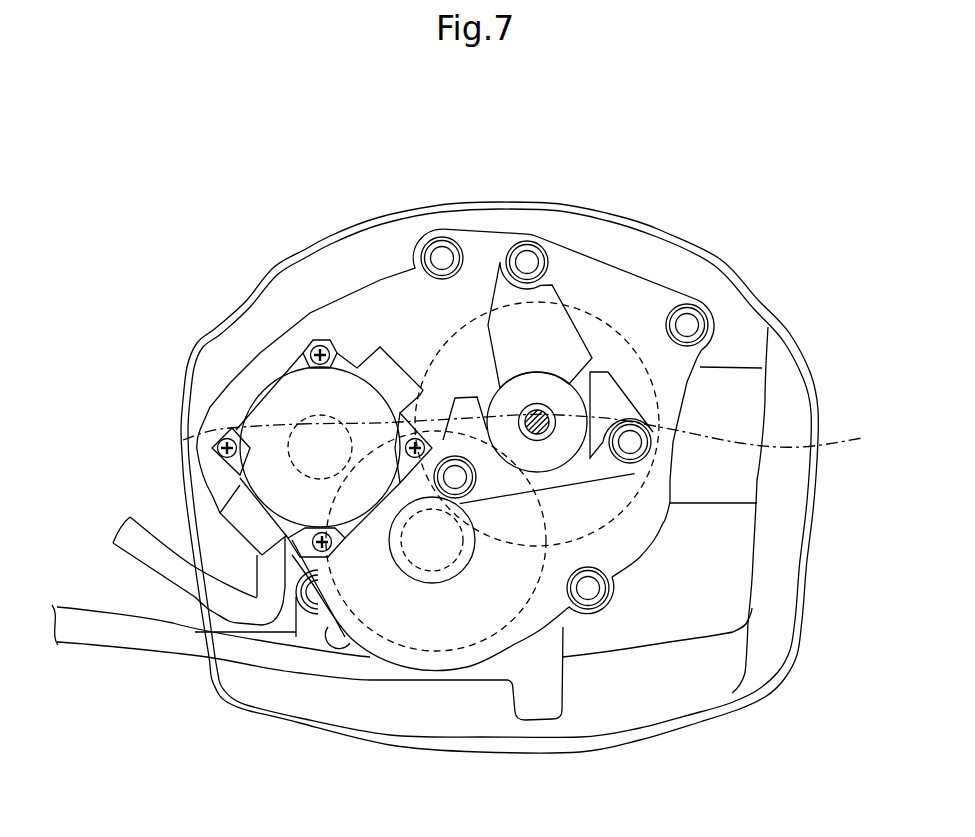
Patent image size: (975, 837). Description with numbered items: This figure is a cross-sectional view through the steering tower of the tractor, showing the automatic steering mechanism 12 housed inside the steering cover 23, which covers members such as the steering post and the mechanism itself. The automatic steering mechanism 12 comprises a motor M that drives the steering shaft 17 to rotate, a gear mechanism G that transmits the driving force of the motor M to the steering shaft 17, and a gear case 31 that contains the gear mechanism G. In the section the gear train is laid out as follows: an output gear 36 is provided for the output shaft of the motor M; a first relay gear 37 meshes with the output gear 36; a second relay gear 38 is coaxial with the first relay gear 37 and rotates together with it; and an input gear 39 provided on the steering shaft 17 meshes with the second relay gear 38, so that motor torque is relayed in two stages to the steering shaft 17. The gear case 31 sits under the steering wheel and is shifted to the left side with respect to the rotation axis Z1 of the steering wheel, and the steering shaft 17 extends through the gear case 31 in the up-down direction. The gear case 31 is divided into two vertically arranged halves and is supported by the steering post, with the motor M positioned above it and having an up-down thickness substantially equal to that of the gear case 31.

The automatic steering mechanism 12 is at (640, 265).
The steering cover 23 is at (221, 701).
The gear case 31 is at (586, 248).
The input gear 39 is at (645, 525).
The motor M is at (283, 400).
The steering shaft 17 is at (537, 410).
The gear mechanism G is at (427, 352).
The first relay gear 37 is at (393, 648).
The second relay gear 38 is at (482, 583).
The output gear 36 is at (183, 440).
The rotation axis Z1 is at (601, 433).